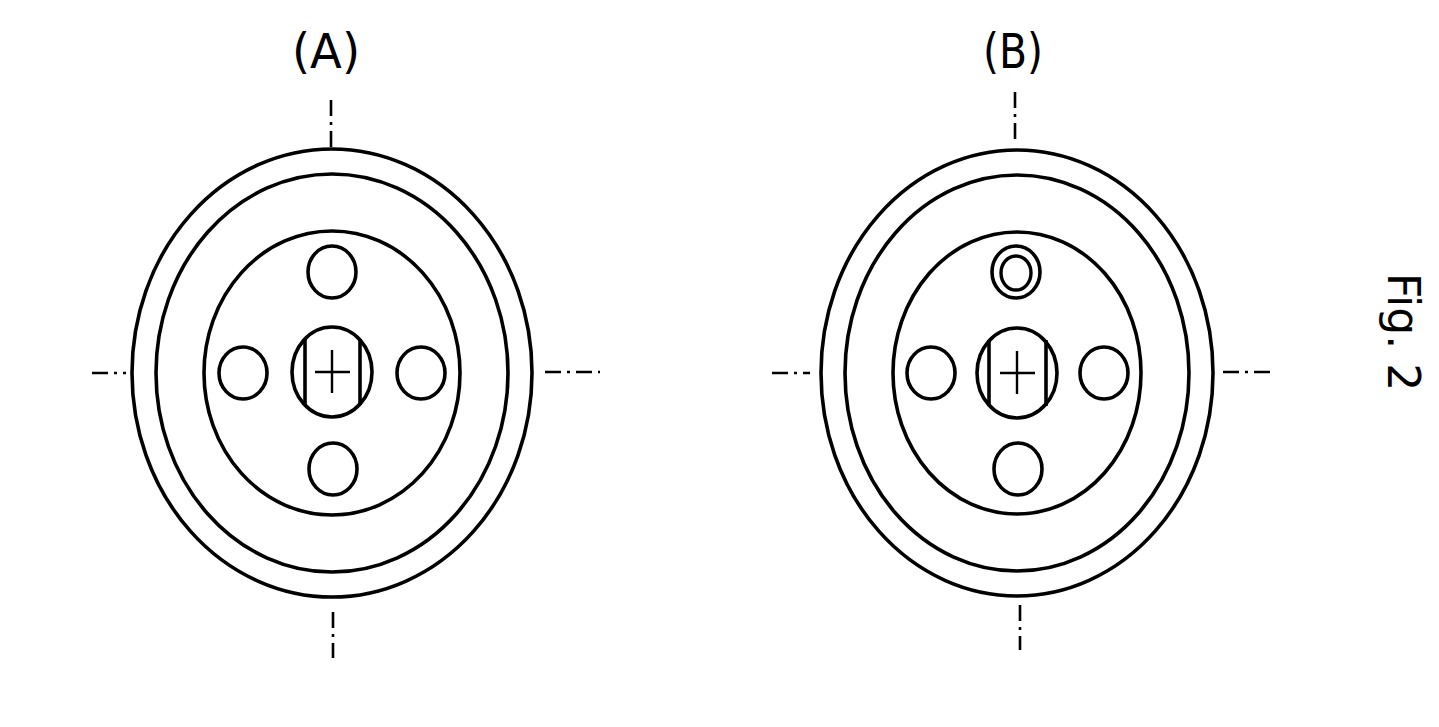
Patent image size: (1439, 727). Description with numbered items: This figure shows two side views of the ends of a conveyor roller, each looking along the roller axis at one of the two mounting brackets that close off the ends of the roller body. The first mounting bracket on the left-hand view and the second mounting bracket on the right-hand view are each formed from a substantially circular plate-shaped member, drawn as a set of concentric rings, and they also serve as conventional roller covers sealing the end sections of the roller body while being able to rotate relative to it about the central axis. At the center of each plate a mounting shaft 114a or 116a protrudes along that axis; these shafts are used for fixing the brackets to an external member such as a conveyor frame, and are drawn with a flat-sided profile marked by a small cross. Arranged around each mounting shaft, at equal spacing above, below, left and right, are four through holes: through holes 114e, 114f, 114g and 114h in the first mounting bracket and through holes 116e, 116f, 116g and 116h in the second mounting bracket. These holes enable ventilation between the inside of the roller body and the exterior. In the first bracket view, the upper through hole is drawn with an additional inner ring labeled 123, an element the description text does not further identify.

The mounting shaft 116a is at (348, 345).
The through hole 116e is at (343, 258).
The through hole 116f is at (427, 357).
The through hole 116g is at (343, 488).
The through hole 116h is at (237, 390).
The mounting shaft 114a is at (1030, 350).
The through hole 114e is at (1025, 265).
The through hole 114f is at (1115, 358).
The through hole 114g is at (1028, 488).
The through hole 114h is at (923, 388).
The bushing 123 is at (998, 268).